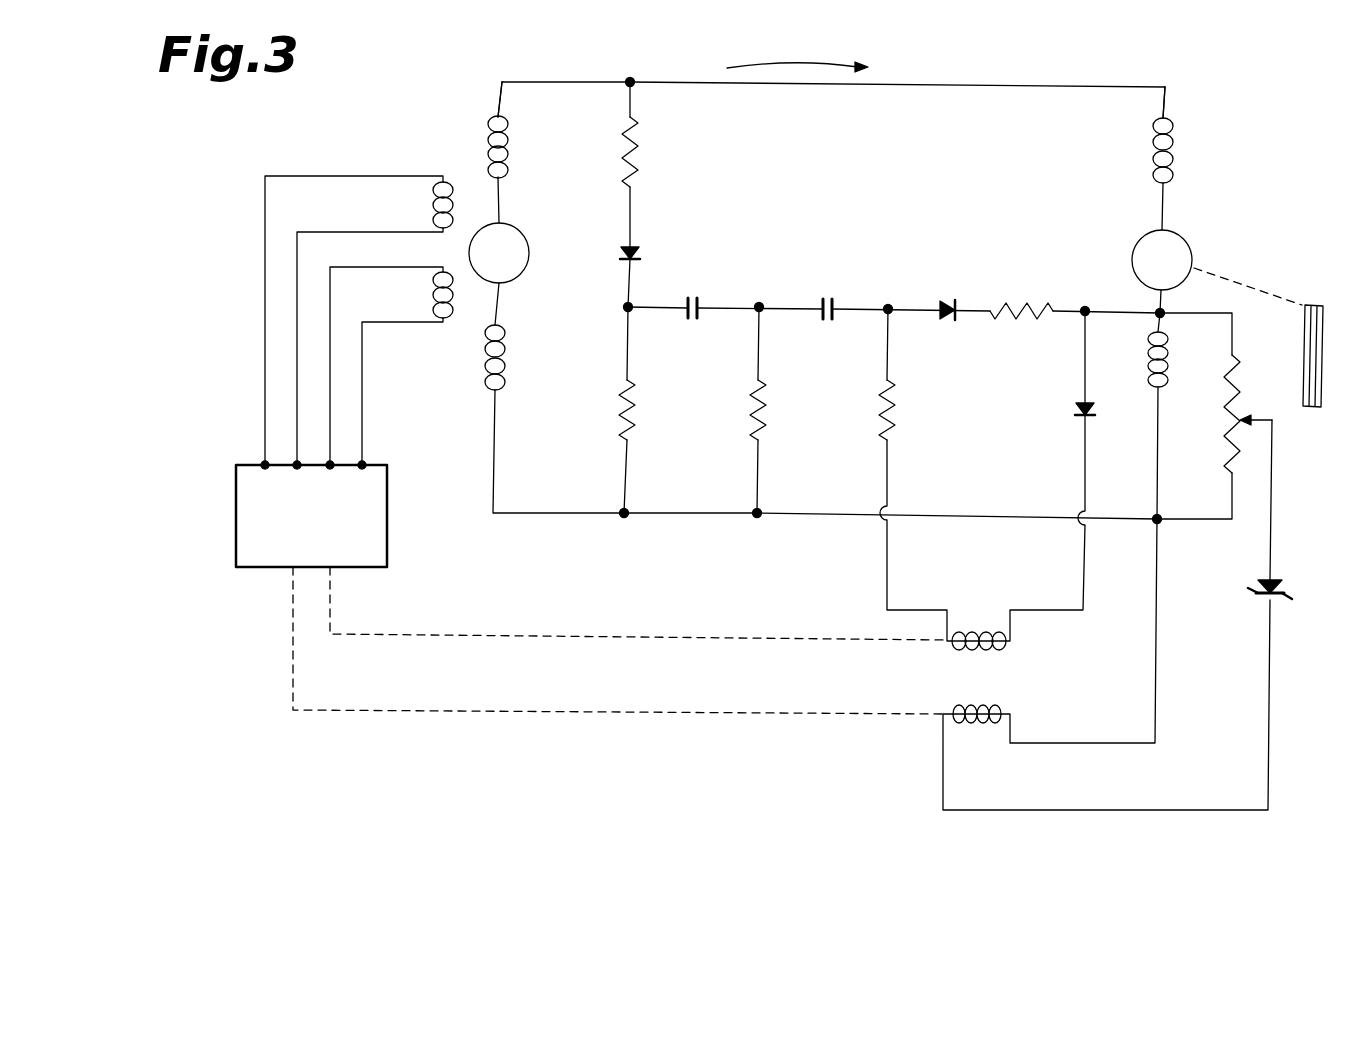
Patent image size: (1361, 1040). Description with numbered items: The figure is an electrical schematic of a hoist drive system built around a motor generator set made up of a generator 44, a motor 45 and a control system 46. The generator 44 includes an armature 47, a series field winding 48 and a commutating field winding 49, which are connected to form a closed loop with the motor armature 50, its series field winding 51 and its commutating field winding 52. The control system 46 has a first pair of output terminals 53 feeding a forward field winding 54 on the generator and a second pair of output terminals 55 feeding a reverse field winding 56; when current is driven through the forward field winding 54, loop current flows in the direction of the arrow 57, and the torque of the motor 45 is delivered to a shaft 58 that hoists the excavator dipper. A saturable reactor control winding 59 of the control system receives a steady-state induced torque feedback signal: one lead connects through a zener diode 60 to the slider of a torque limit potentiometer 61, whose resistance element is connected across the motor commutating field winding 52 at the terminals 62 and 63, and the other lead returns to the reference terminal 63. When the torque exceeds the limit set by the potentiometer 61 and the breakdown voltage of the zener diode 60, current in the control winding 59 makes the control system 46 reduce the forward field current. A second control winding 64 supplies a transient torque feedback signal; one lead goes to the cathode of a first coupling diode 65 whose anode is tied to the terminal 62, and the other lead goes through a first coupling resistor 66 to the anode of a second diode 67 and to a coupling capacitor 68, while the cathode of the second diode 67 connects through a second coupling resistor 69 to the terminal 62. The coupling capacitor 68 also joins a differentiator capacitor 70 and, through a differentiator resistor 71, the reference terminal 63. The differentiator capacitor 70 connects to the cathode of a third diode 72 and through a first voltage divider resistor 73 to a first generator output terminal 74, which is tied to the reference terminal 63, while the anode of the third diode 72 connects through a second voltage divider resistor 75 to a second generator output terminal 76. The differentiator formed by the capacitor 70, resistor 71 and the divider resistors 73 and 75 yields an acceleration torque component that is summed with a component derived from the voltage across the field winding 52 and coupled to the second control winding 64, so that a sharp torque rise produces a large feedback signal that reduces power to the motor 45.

The generator 44 is at (467, 160).
The motor 45 is at (1201, 224).
The control system 46 is at (236, 493).
The armature 47 is at (521, 238).
The series field winding 48 is at (508, 152).
The commutating field winding 49 is at (505, 360).
The motor armature 50 is at (1137, 240).
The series field winding 51 is at (1173, 146).
The commutating field winding 52 is at (1148, 355).
The first pair of output terminals 53 is at (297, 460).
The forward field winding 54 is at (433, 205).
The second pair of output terminals 55 is at (330, 460).
The reverse field winding 56 is at (433, 295).
The arrow 57 is at (820, 62).
The shaft 58 is at (1322, 312).
The saturable reactor control winding 59 is at (995, 705).
The zener diode 60 is at (1258, 598).
The torque limit potentiometer 61 is at (1240, 385).
The terminal 62 is at (1165, 318).
The reference terminal 63 is at (1162, 522).
The second control winding 64 is at (982, 630).
The first coupling diode 65 is at (1078, 405).
The first coupling resistor 66 is at (898, 413).
The second diode 67 is at (945, 300).
The coupling capacitor 68 is at (830, 293).
The second coupling resistor 69 is at (1035, 300).
The differentiator capacitor 70 is at (695, 293).
The differentiator resistor 71 is at (770, 395).
The third diode 72 is at (640, 250).
The first voltage divider resistor 73 is at (635, 395).
The first generator output terminal 74 is at (620, 518).
The second voltage divider resistor 75 is at (640, 155).
The second generator output terminal 76 is at (631, 78).